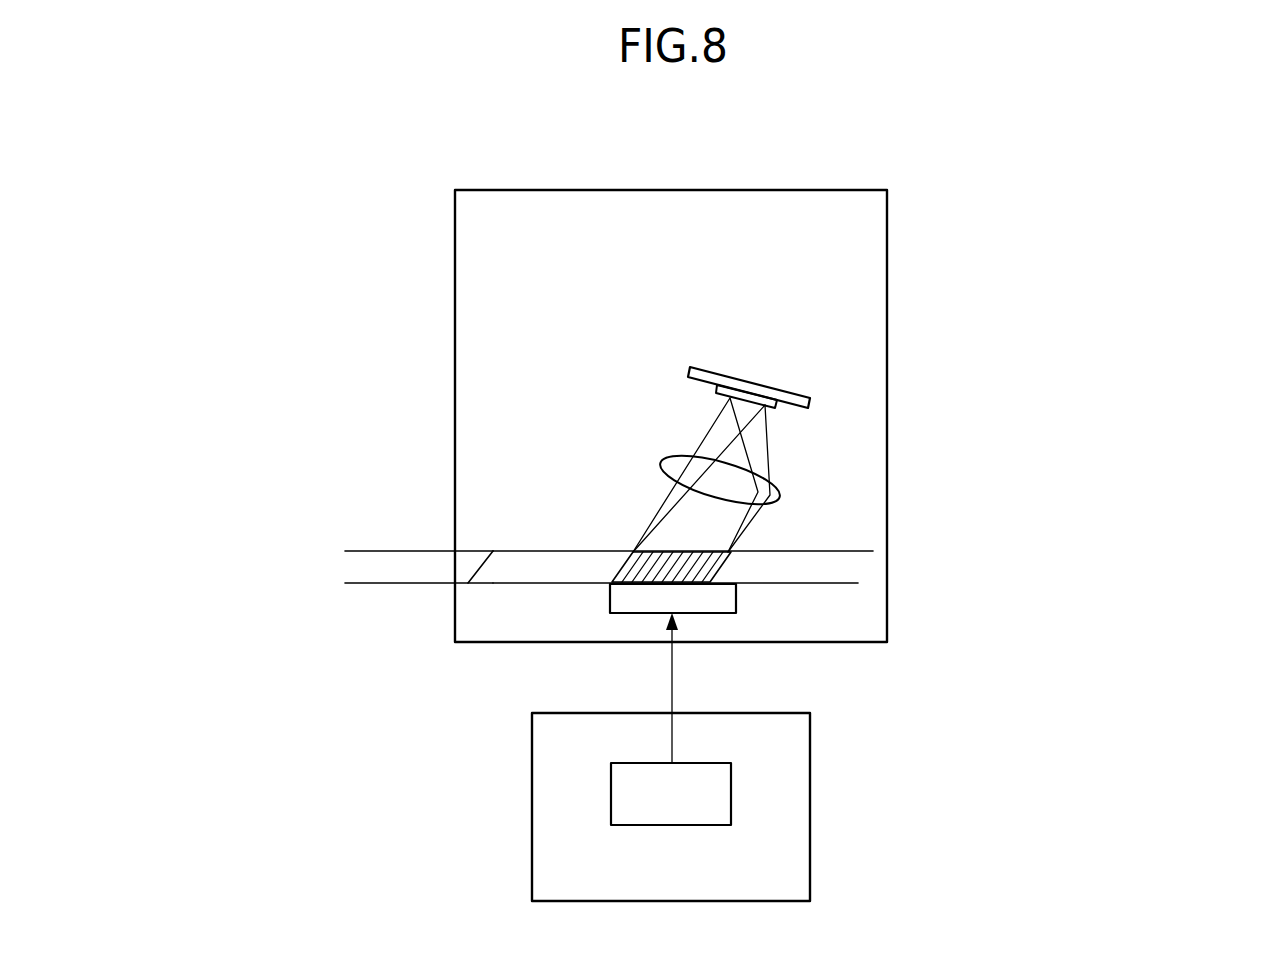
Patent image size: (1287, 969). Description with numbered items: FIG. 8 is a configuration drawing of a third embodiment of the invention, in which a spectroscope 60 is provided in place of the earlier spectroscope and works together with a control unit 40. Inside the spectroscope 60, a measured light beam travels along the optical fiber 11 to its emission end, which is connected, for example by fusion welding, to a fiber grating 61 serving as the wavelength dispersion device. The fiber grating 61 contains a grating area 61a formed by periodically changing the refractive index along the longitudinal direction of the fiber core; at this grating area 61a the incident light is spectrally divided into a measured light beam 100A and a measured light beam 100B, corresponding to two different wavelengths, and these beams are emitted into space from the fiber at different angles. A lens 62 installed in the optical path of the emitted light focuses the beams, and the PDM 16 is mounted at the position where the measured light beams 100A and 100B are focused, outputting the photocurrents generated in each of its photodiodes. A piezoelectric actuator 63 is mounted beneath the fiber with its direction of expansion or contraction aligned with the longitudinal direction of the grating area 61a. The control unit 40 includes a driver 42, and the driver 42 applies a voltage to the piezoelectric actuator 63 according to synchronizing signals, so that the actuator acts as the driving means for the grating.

The spectroscope 60 is at (668, 190).
The PDM 16 is at (787, 391).
The measured light beam 100A is at (697, 438).
The measured light beam 100B is at (769, 457).
The lens 62 is at (781, 495).
The optical fiber 11 is at (375, 551).
The fiber grating 61 is at (825, 551).
The grating area 61a is at (708, 566).
The piezoelectric actuator 63 is at (736, 600).
The control unit 40 is at (810, 754).
The driver 42 is at (731, 795).